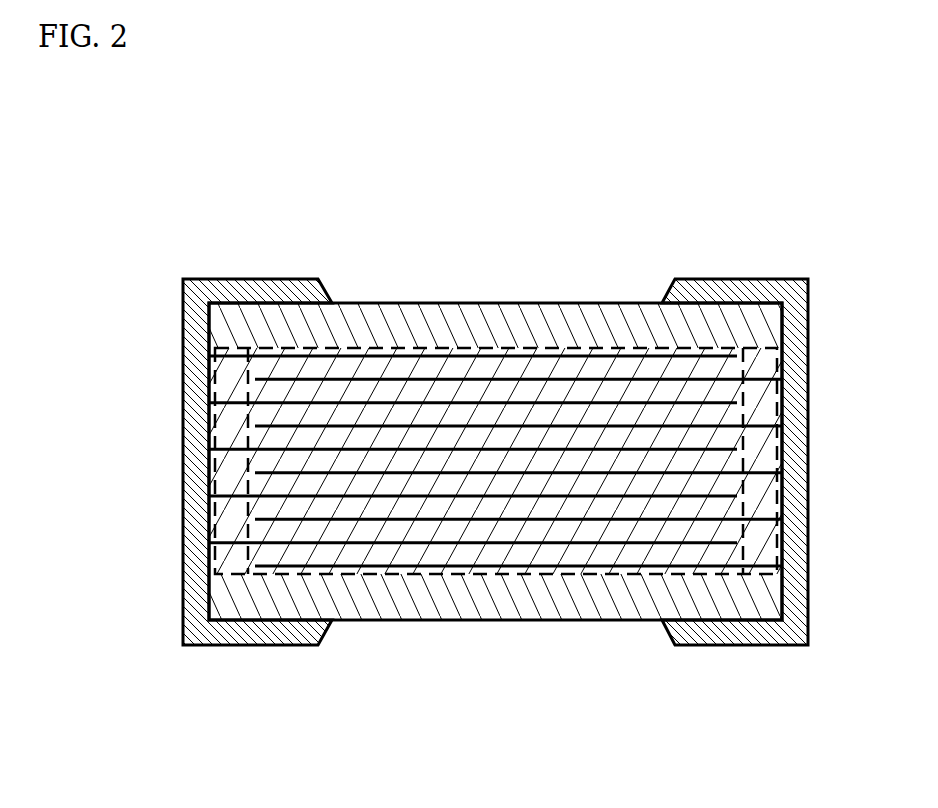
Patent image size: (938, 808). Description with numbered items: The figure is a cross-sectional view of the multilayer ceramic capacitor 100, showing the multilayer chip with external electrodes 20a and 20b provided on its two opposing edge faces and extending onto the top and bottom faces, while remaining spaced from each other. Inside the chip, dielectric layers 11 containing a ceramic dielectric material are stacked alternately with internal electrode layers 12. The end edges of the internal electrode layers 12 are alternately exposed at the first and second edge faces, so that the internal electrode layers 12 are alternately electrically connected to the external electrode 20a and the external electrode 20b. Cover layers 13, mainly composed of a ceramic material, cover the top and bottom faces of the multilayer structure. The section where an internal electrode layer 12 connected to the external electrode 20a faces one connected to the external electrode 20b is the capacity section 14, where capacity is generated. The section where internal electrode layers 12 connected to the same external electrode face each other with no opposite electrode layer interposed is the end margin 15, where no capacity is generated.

The multilayer ceramic capacitor 100 is at (712, 224).
The dielectric layer 11 is at (613, 530).
The internal electrode layer 12 is at (477, 500).
The cover layer 13 is at (395, 318).
The capacity section 14 is at (517, 348).
The end margin 15 is at (233, 349).
The external electrode 20a is at (207, 279).
The external electrode 20b is at (775, 278).